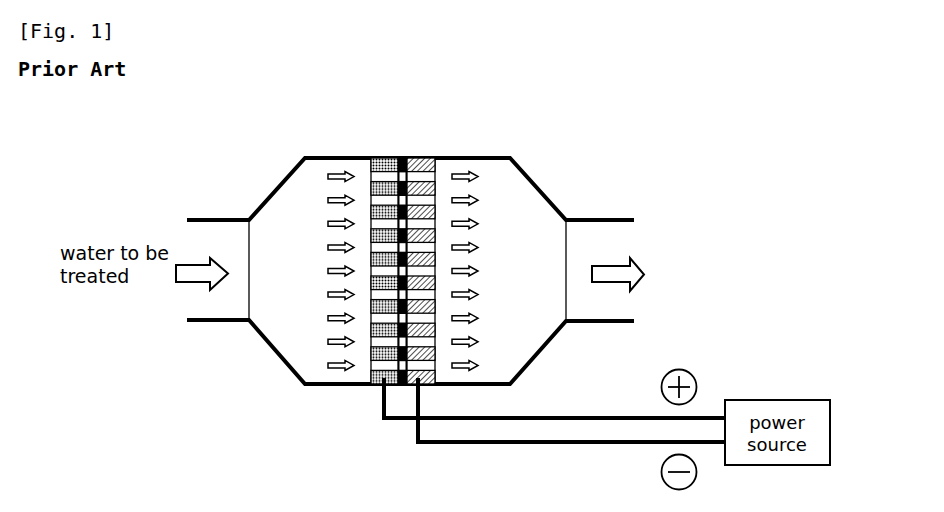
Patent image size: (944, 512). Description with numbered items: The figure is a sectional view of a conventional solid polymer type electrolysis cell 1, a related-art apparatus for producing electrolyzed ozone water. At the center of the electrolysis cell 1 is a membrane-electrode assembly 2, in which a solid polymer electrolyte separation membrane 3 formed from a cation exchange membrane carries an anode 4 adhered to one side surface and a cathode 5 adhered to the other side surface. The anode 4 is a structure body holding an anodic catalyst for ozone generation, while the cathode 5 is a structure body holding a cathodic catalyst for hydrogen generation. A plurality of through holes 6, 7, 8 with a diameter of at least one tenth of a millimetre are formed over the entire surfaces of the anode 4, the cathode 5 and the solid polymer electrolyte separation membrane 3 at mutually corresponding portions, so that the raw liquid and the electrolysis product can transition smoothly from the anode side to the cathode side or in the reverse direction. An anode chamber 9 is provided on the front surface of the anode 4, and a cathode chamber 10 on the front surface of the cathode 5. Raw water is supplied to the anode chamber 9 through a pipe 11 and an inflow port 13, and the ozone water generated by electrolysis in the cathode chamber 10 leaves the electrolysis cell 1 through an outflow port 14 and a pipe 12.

The electrolysis cell 1 is at (276, 372).
The membrane-electrode assembly 2 is at (412, 224).
The solid polymer electrolyte separation membrane 3 is at (404, 158).
The anode 4 is at (372, 158).
The cathode 5 is at (435, 158).
The through hole 6 is at (392, 381).
The through hole 7 is at (380, 367).
The through hole 8 is at (428, 381).
The anode chamber 9 is at (303, 289).
The cathode chamber 10 is at (511, 300).
The pipe 11 is at (205, 220).
The pipe 12 is at (620, 219).
The inflow port 13 is at (248, 262).
The outflow port 14 is at (567, 252).